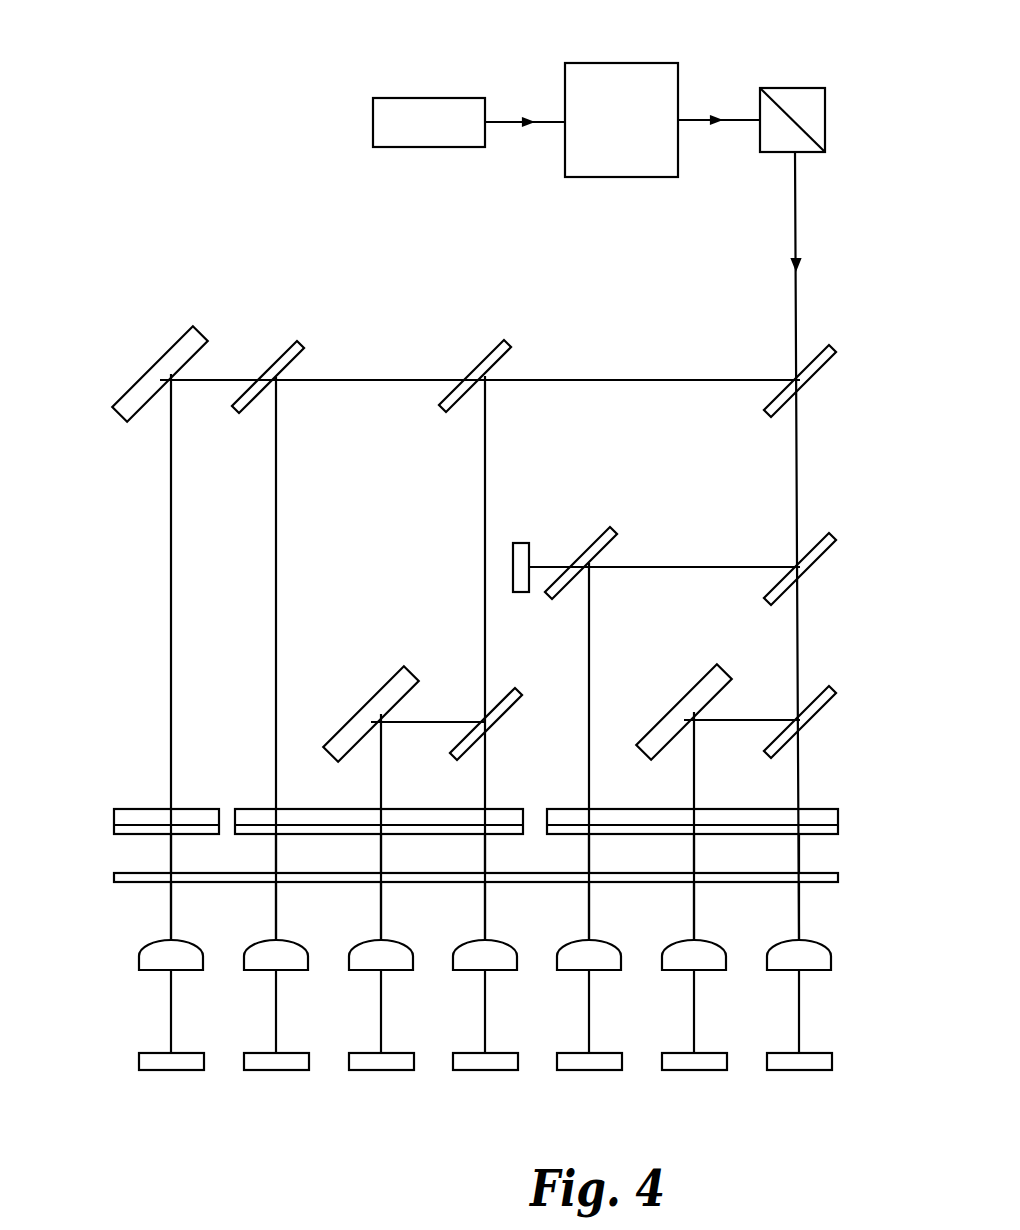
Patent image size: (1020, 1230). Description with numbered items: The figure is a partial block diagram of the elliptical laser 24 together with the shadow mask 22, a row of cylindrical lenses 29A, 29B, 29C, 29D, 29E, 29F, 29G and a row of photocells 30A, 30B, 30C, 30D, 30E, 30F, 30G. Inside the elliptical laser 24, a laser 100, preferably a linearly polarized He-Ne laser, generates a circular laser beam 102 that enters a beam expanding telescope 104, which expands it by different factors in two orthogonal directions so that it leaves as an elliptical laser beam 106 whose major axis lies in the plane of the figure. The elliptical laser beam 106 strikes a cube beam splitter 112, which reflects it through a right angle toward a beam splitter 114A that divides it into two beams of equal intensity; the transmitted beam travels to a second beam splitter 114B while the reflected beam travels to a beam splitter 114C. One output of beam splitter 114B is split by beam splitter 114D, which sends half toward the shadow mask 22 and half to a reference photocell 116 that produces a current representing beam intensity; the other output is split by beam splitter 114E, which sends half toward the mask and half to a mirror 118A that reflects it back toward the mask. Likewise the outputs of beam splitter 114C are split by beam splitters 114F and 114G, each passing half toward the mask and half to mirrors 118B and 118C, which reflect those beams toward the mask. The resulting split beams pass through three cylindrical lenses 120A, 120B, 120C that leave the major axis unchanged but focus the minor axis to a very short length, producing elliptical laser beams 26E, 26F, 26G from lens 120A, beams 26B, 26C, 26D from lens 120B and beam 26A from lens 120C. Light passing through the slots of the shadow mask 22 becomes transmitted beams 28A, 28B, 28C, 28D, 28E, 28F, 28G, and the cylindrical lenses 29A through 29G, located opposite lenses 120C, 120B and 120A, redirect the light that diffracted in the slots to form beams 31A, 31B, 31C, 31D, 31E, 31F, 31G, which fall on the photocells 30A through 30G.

The laser 100 is at (428, 92).
The circular laser beam 102 is at (522, 112).
The beam expanding telescope 104 is at (595, 58).
The elliptical laser beam 106 is at (704, 112).
The cube beam splitter 112 is at (797, 100).
The beam splitter 114A is at (810, 393).
The second beam splitter 114B is at (810, 580).
The beam splitter 114C is at (487, 327).
The beam splitter 114D is at (582, 545).
The beam splitter 114E is at (818, 730).
The beam splitter 114F is at (498, 735).
The beam splitter 114G is at (262, 370).
The reference photocell 116 is at (522, 540).
The mirror 118A is at (660, 705).
The mirror 118B is at (370, 690).
The mirror 118C is at (158, 340).
The cylindrical lens 120A is at (828, 805).
The cylindrical lens 120B is at (500, 805).
The cylindrical lens 120C is at (145, 800).
The elliptical laser 24 is at (479, 787).
The shadow mask 22 is at (122, 890).
The elliptical laser beam 26A is at (167, 851).
The elliptical laser beam 26B is at (273, 850).
The elliptical laser beam 26C is at (378, 850).
The elliptical laser beam 26D is at (482, 850).
The elliptical laser beam 26E is at (586, 850).
The elliptical laser beam 26F is at (691, 850).
The elliptical laser beam 26G is at (796, 850).
The transmitted beam 28A is at (167, 915).
The transmitted beam 28B is at (273, 912).
The transmitted beam 28C is at (378, 912).
The transmitted beam 28D is at (482, 912).
The transmitted beam 28E is at (586, 912).
The transmitted beam 28F is at (691, 912).
The transmitted beam 28G is at (796, 912).
The cylindrical lens 29A is at (152, 975).
The cylindrical lens 29B is at (265, 974).
The cylindrical lens 29C is at (370, 974).
The cylindrical lens 29D is at (474, 974).
The cylindrical lens 29E is at (578, 974).
The cylindrical lens 29F is at (683, 974).
The cylindrical lens 29G is at (788, 974).
The beam 31A is at (169, 1013).
The beam 31B is at (274, 1017).
The beam 31C is at (379, 1017).
The beam 31D is at (483, 1017).
The beam 31E is at (587, 1017).
The beam 31F is at (692, 1017).
The beam 31G is at (797, 1017).
The photocell 30A is at (158, 1052).
The photocell 30B is at (264, 1051).
The photocell 30C is at (369, 1051).
The photocell 30D is at (473, 1051).
The photocell 30E is at (577, 1051).
The photocell 30F is at (682, 1051).
The photocell 30G is at (787, 1051).